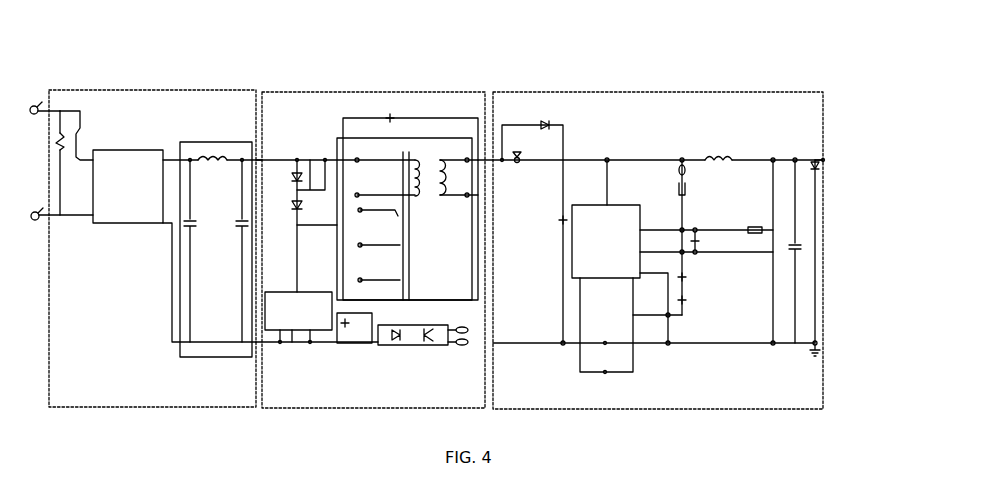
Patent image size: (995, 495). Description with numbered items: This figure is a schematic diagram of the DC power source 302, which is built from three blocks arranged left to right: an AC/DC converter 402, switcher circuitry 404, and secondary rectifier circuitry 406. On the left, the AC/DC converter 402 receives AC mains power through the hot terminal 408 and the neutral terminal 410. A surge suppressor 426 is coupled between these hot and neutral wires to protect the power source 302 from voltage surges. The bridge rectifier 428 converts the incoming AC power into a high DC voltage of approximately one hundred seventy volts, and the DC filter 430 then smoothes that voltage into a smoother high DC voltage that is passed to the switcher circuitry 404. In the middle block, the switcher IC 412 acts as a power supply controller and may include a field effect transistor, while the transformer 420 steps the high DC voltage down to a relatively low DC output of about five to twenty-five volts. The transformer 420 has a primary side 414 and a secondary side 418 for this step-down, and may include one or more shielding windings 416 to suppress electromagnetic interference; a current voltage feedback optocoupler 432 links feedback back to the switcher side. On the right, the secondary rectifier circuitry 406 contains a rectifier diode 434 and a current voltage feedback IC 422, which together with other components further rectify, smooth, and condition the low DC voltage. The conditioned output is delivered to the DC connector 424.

The DC power source 302 is at (795, 37).
The AC/DC converter 402 is at (157, 87).
The switcher circuitry 404 is at (377, 88).
The secondary rectifier circuitry 406 is at (660, 90).
The hot terminal 408 is at (38, 94).
The neutral terminal 410 is at (40, 225).
The switcher integrated circuit 412 is at (308, 290).
The primary side 414 is at (404, 219).
The shielding windings 416 is at (410, 243).
The secondary side 418 is at (428, 143).
The transformer 420 is at (417, 305).
The current voltage feedback IC 422 is at (623, 203).
The DC connector 424 is at (828, 158).
The surge suppressor 426 is at (56, 145).
The bridge rectifier 428 is at (120, 228).
The DC filter 430 is at (213, 140).
The current voltage feedback optocoupler 432 is at (380, 345).
The rectifier diode 434 is at (517, 165).